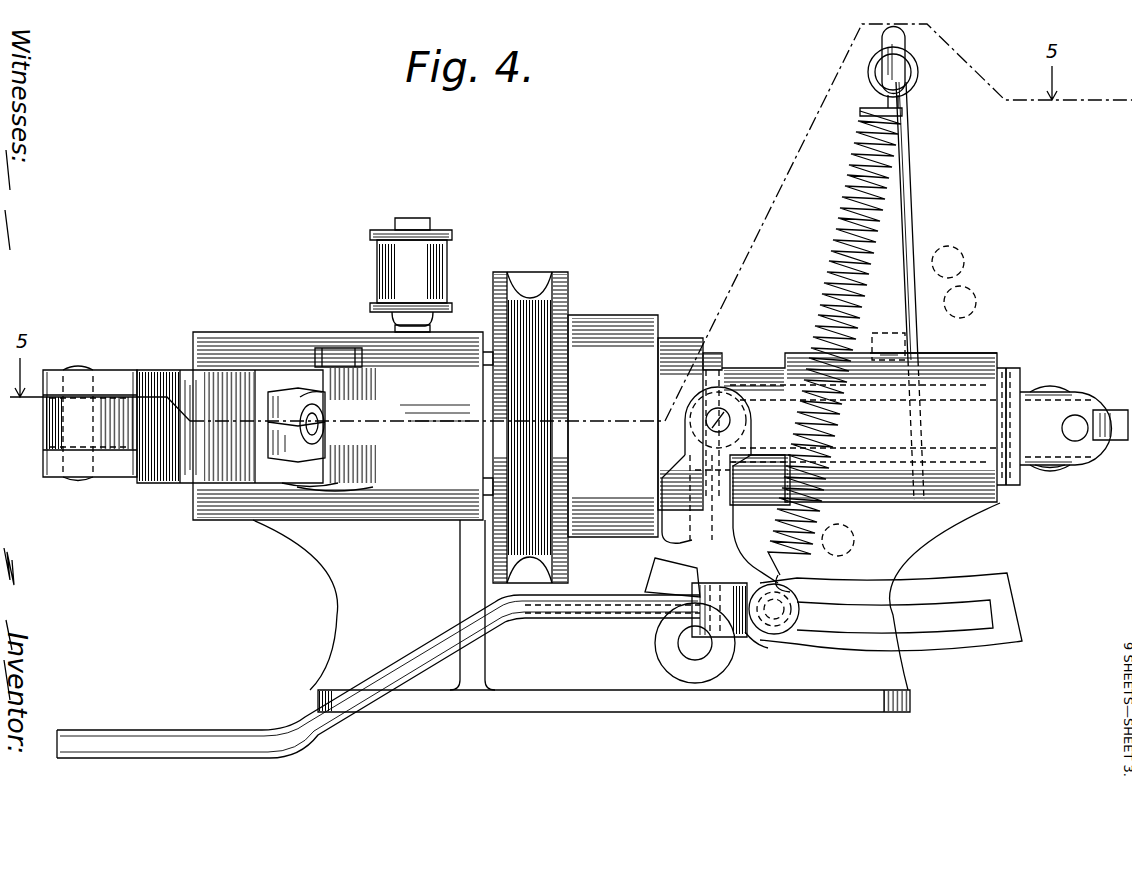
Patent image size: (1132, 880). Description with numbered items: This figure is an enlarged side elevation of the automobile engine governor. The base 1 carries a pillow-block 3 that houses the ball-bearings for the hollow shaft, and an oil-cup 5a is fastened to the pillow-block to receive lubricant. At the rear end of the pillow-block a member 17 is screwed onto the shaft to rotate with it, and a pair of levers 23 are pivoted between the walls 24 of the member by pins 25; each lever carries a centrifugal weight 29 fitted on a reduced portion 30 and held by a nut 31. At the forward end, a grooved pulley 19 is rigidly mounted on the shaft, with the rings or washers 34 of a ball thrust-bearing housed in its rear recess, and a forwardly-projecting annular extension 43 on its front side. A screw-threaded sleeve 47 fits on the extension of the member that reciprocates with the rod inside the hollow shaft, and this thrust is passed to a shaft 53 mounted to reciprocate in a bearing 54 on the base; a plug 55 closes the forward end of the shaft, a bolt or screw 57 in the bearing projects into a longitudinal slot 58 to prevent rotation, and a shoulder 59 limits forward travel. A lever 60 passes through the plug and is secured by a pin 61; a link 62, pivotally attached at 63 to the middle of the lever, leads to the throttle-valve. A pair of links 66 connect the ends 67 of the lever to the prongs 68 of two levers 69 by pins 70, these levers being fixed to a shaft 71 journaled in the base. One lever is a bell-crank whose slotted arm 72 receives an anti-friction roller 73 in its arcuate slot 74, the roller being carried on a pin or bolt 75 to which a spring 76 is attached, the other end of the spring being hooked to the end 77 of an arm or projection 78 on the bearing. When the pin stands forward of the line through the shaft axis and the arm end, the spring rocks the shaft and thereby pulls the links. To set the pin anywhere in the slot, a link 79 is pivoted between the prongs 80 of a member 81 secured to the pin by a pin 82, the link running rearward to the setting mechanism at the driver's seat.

The base 1 is at (672, 708).
The pillow-block 3 is at (343, 426).
The oil-cup 5a is at (433, 262).
The member 17 is at (55, 478).
The pulley 19 is at (530, 427).
The lever 23 is at (90, 422).
The walls 24 is at (94, 425).
The pin 25 is at (78, 370).
The centrifugal weight 29 is at (237, 428).
The reduced portion 30 is at (318, 440).
The nut 31 is at (305, 397).
The rings or washers 34 is at (468, 522).
The forwardly-projecting annular extension 43 is at (613, 426).
The sleeve 47 is at (670, 345).
The shaft 53 is at (772, 470).
The bearing 54 is at (965, 351).
The plug 55 is at (1022, 368).
The bolt or screw 57 is at (890, 335).
The longitudinal slot 58 is at (915, 355).
The shoulder 59 is at (716, 358).
The lever 60 is at (1085, 440).
The pin 61 is at (1045, 390).
The link 62 is at (1115, 408).
The pivotal attachment 63 is at (1095, 414).
The links 66 is at (871, 427).
The ends 67 is at (1050, 467).
The prongs 68 is at (740, 392).
The lever 69 is at (720, 519).
The pin 70 is at (731, 424).
The shaft 71 is at (695, 643).
The slotted arm 72 is at (920, 650).
The anti-friction roller 73 is at (790, 590).
The slot 74 is at (940, 602).
The pin or bolt 75 is at (800, 634).
The spring 76 is at (845, 240).
The end 77 is at (908, 82).
The arm or projection 78 is at (903, 210).
The link 79 is at (318, 735).
The prongs 80 is at (695, 612).
The member 81 is at (755, 642).
The pin 82 is at (718, 583).